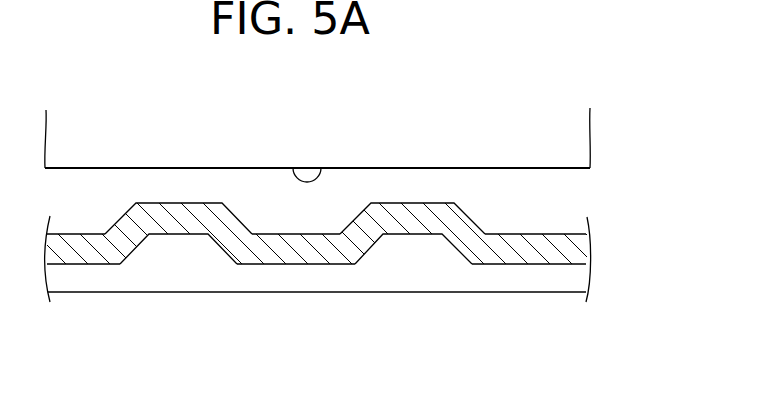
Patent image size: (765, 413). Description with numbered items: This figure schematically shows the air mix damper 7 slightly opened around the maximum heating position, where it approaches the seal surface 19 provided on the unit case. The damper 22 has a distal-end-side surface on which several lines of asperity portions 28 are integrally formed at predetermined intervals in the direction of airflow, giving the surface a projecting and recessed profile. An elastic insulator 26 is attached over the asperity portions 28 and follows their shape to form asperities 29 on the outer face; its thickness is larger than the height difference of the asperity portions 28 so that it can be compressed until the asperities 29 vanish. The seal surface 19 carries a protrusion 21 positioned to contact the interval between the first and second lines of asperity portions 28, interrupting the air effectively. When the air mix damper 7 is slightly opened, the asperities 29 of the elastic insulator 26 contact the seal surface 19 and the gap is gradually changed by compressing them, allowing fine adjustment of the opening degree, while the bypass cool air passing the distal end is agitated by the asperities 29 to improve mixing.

The air mix damper 7 is at (340, 228).
The seal surface 19 is at (317, 137).
The protrusion 21 is at (320, 168).
The damper 22 is at (328, 278).
The elastic insulator 26 is at (338, 235).
The asperity portions 28 is at (413, 245).
The asperities 29 is at (149, 207).